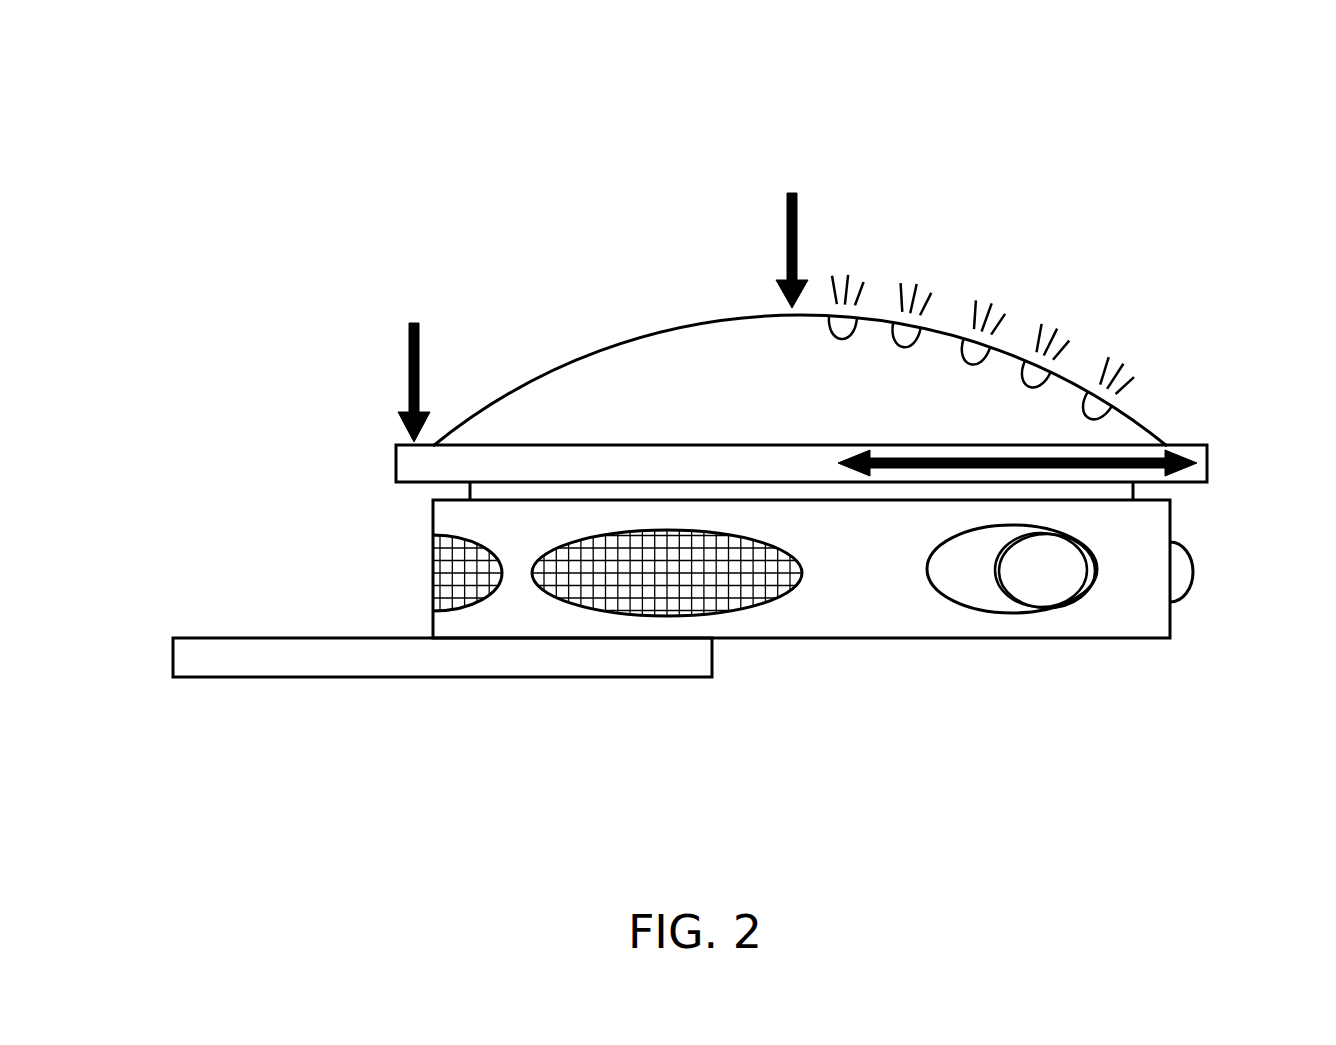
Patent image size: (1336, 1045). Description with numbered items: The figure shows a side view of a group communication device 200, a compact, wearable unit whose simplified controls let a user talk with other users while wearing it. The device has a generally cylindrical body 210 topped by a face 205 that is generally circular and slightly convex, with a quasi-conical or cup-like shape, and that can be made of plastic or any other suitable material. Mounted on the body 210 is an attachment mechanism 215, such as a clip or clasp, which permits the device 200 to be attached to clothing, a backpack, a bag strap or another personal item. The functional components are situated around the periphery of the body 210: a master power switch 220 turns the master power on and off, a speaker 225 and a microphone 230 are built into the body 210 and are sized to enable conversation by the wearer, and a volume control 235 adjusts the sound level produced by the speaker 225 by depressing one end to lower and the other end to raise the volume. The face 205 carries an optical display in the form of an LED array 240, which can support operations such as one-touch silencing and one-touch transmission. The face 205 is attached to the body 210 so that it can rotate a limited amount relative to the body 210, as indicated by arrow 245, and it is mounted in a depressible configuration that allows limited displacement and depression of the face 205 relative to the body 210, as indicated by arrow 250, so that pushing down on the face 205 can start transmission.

The group communication device 200 is at (1180, 106).
The face 205 is at (577, 355).
The body 210 is at (1140, 642).
The attachment mechanism 215 is at (416, 678).
The master power switch 220 is at (992, 568).
The speaker 225 is at (757, 607).
The microphone 230 is at (495, 585).
The volume control 235 is at (1187, 548).
The LED array 240 is at (1035, 282).
The arrow 245 is at (1117, 462).
The arrow 250 is at (408, 370).